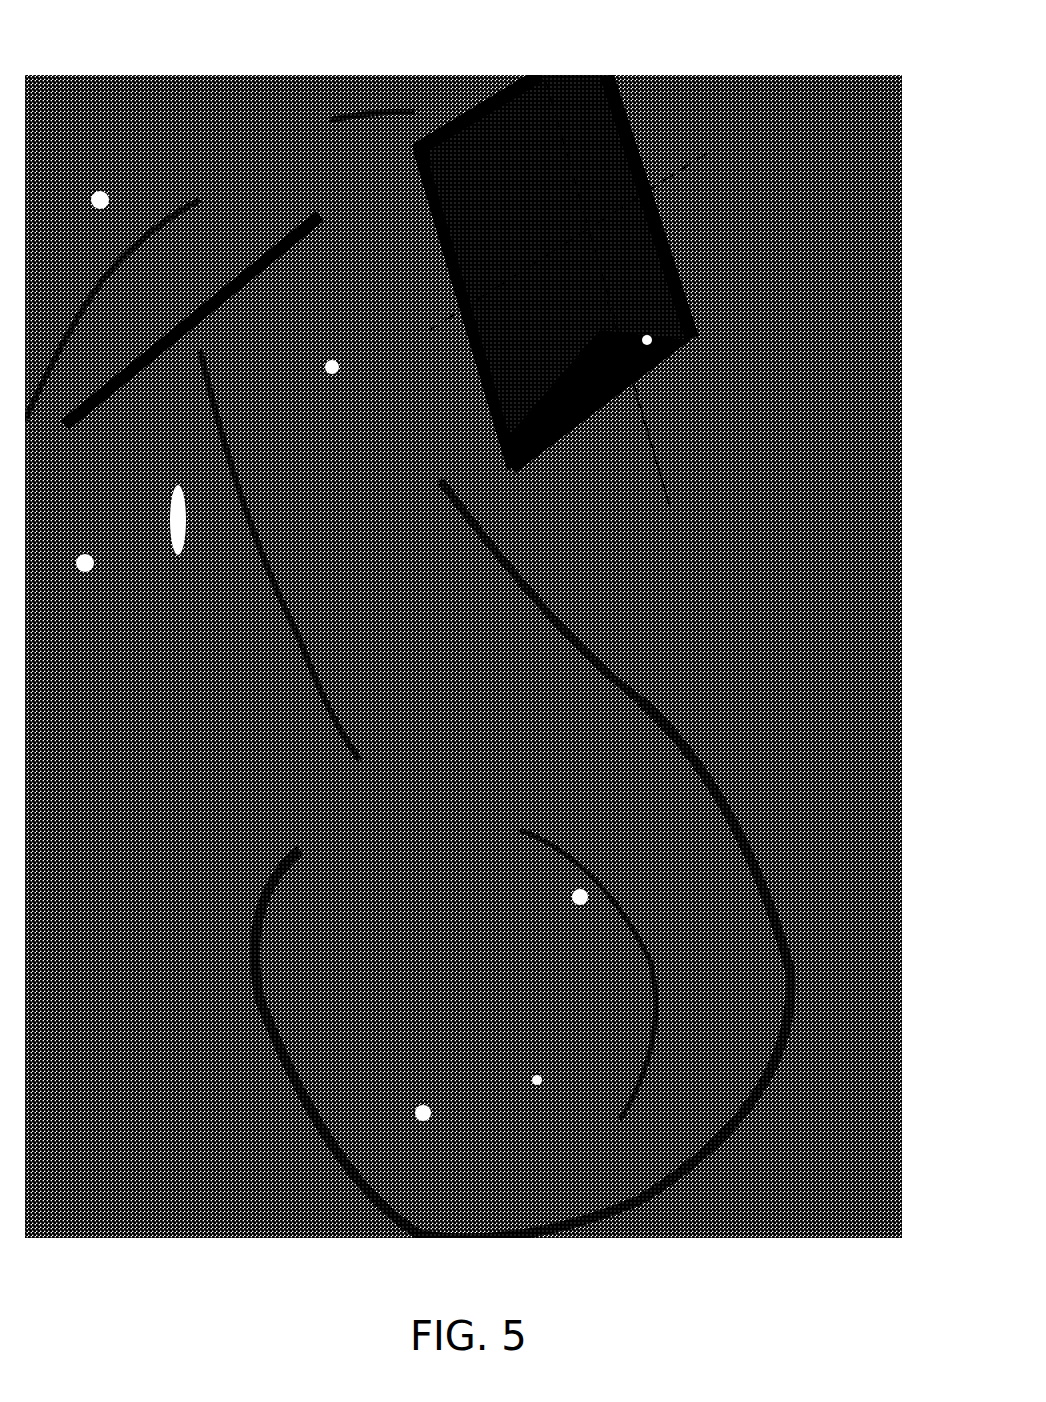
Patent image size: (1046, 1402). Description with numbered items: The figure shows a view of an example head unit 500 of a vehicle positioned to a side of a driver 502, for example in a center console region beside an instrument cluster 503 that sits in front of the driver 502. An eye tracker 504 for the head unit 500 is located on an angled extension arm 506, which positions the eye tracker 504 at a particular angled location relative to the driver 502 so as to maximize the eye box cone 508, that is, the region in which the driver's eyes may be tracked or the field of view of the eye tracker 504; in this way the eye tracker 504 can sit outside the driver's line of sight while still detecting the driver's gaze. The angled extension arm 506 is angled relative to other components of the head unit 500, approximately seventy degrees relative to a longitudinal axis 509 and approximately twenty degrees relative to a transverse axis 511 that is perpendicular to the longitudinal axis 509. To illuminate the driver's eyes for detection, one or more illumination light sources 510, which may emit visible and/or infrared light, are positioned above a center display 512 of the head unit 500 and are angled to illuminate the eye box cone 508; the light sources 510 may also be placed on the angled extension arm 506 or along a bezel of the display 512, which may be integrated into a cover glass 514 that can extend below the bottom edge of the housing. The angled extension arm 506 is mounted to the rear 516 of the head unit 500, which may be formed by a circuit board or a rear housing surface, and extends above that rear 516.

The head unit 500 is at (590, 58).
The driver 502 is at (703, 1148).
The instrument cluster 503 is at (271, 207).
The eye tracker 504 is at (492, 70).
The angled extension arm 506 is at (417, 104).
The eye box cone 508 is at (746, 590).
The longitudinal axis 509 is at (663, 483).
The illumination light sources 510 is at (430, 128).
The transverse axis 511 is at (703, 148).
The center display 512 is at (607, 117).
The cover glass 514 is at (412, 163).
The rear 516 is at (420, 246).